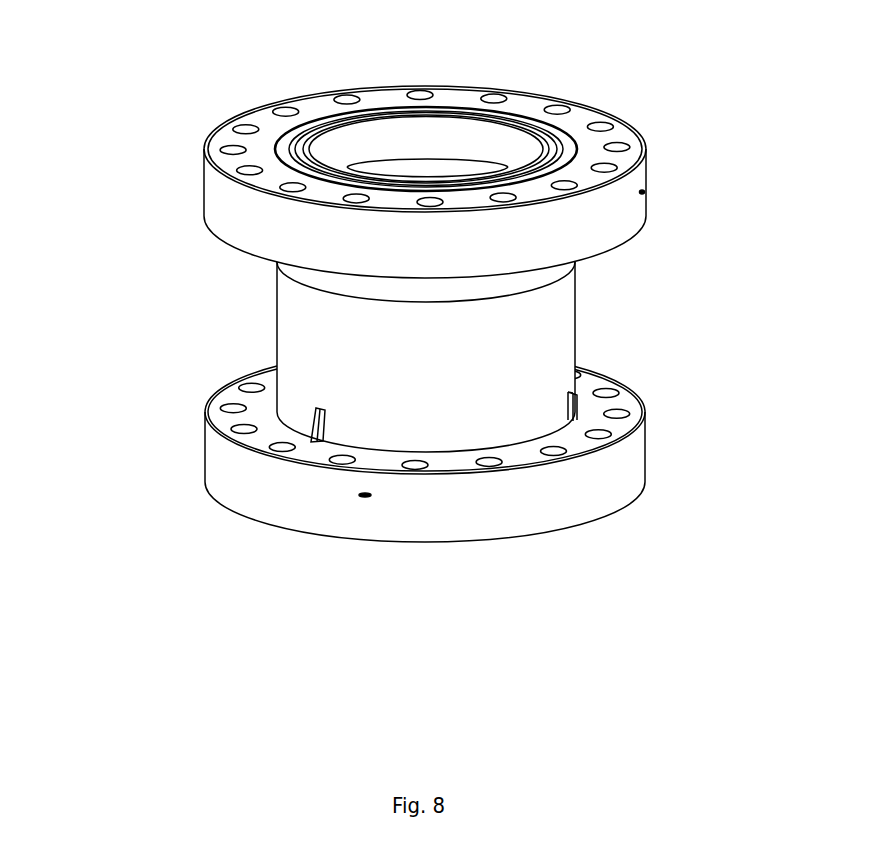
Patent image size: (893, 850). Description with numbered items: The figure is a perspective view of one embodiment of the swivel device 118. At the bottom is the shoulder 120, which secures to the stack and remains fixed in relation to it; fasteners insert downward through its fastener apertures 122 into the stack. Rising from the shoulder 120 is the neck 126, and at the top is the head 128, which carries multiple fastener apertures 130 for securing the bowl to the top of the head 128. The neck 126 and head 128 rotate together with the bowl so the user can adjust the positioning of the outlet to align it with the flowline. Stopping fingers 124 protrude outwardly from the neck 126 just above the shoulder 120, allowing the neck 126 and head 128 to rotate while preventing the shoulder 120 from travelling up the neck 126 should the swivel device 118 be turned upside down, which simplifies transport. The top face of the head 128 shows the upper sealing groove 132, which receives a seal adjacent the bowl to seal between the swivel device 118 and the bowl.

The swivel device 118 is at (577, 287).
The shoulder 120 is at (637, 457).
The fastener apertures 122 is at (642, 412).
The stopping fingers 124 is at (573, 398).
The neck 126 is at (272, 335).
The head 128 is at (227, 223).
The fastener apertures 130 is at (242, 133).
The upper sealing groove 132 is at (317, 132).